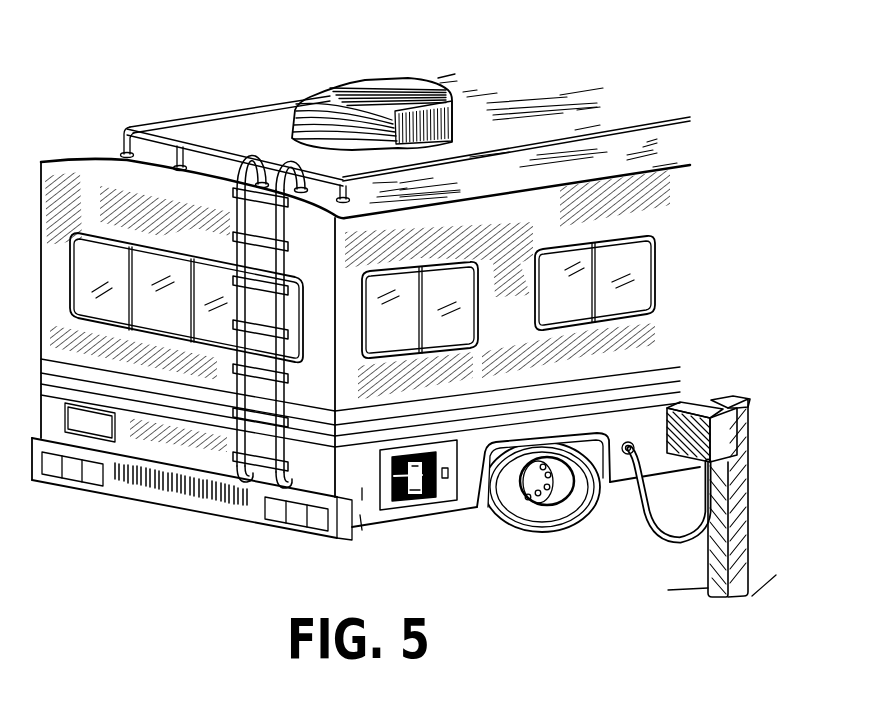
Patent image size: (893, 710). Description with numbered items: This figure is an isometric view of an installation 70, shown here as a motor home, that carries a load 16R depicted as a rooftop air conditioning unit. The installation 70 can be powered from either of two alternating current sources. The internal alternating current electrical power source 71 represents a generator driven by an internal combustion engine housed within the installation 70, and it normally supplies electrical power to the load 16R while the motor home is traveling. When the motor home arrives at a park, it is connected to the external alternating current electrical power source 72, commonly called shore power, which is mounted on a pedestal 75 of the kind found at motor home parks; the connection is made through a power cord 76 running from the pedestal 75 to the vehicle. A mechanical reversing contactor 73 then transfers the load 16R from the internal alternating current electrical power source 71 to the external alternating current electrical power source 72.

The installation 70 is at (166, 77).
The load 16R is at (365, 90).
The internal alternating current electrical power source 71 is at (408, 482).
The external alternating current electrical power source 72 is at (699, 405).
The reversing contactor 73 is at (357, 543).
The pedestal 75 is at (727, 445).
The power cord 76 is at (425, 482).